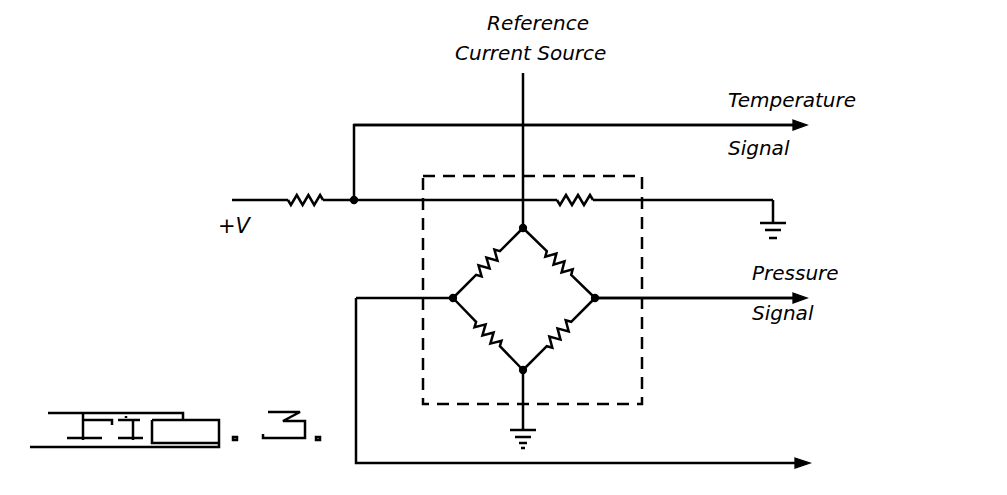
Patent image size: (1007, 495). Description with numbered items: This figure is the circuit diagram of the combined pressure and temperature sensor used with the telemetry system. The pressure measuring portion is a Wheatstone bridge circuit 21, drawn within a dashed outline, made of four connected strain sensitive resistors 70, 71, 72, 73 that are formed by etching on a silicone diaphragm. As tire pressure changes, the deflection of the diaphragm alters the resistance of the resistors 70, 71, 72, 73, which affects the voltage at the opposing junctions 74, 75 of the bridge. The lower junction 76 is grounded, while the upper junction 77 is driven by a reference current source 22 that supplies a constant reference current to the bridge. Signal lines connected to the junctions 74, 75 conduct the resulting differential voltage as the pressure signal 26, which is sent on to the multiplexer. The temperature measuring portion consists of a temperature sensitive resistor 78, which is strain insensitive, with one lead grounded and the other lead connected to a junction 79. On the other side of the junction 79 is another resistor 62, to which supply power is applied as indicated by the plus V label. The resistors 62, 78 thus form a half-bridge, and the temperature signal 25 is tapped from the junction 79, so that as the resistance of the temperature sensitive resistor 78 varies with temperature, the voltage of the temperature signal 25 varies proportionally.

The bridge circuit 21 is at (642, 398).
The current source 22 is at (523, 80).
The temperature signal 25 is at (687, 124).
The pressure signal 26 is at (696, 297).
The resistor 62 is at (296, 196).
The strain sensitive resistor 70 is at (568, 262).
The strain sensitive resistor 71 is at (487, 282).
The strain sensitive resistor 72 is at (482, 332).
The strain sensitive resistor 73 is at (555, 330).
The junction 74 is at (595, 300).
The junction 75 is at (452, 296).
The junction 76 is at (524, 371).
The junction 77 is at (522, 228).
The temperature sensitive resistor 78 is at (577, 193).
The junction 79 is at (355, 203).